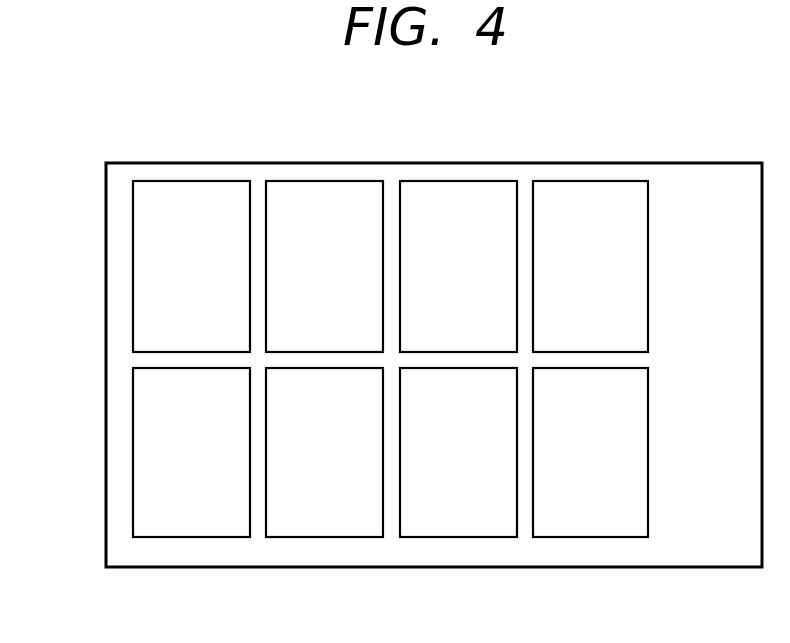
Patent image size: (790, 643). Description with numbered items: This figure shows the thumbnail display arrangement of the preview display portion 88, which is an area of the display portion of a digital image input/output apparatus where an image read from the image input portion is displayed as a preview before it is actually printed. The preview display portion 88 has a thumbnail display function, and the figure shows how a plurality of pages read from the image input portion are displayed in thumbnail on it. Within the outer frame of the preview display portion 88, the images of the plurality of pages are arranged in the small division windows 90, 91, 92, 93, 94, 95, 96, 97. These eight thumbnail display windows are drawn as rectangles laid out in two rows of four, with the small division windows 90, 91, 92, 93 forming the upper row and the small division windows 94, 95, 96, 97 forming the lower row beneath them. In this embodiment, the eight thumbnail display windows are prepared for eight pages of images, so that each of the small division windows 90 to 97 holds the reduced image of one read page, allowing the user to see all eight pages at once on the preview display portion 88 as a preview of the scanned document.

The preview display portion 88 is at (106, 232).
The small division window 90 is at (196, 181).
The small division window 91 is at (321, 181).
The small division window 92 is at (463, 181).
The small division window 93 is at (596, 181).
The small division window 94 is at (192, 537).
The small division window 95 is at (317, 537).
The small division window 96 is at (459, 537).
The small division window 97 is at (592, 537).